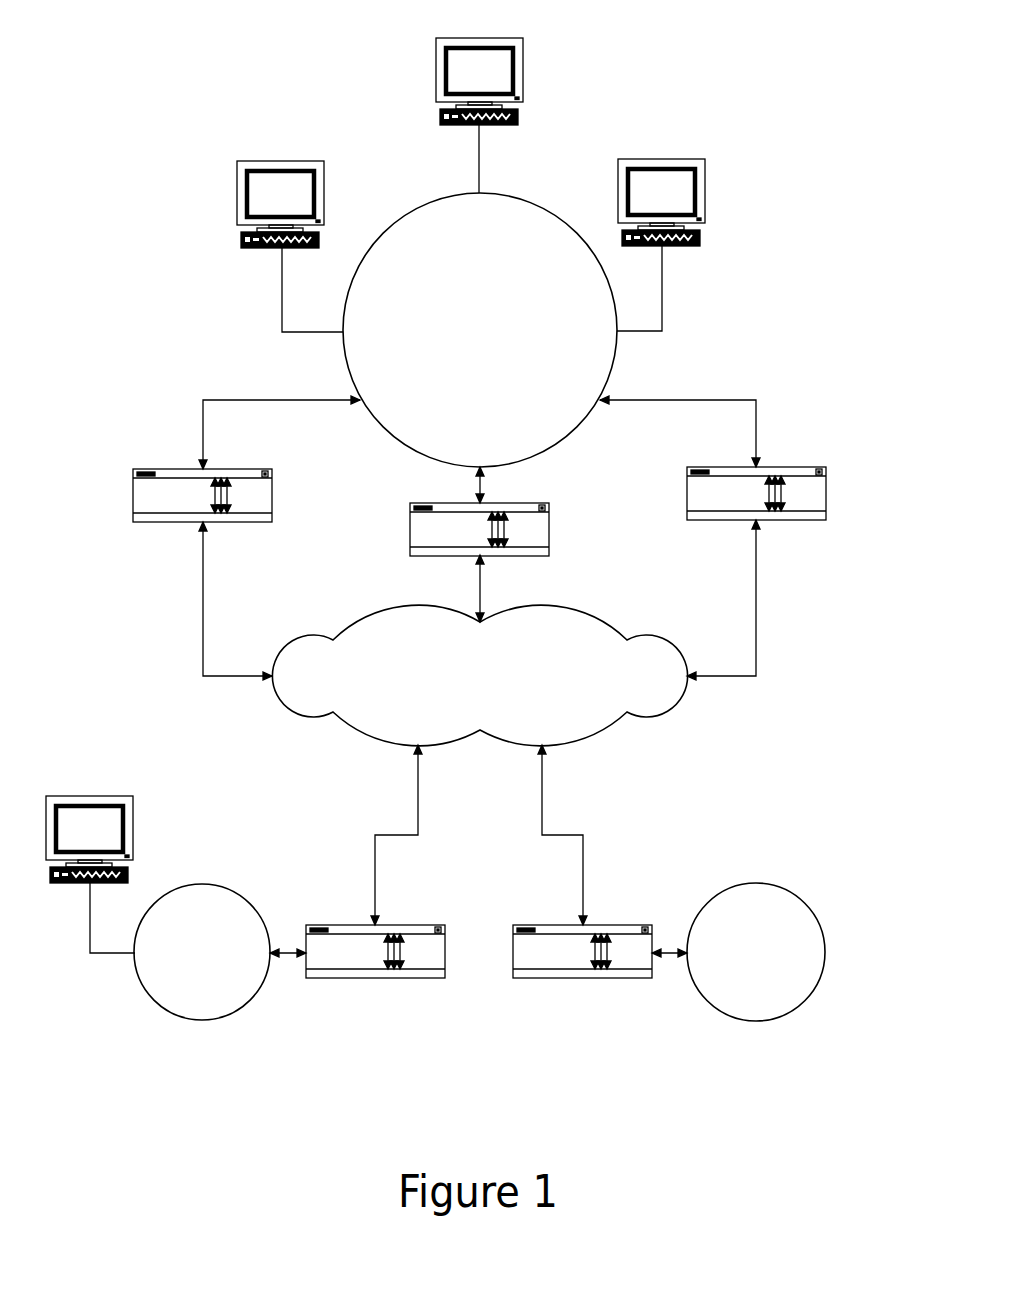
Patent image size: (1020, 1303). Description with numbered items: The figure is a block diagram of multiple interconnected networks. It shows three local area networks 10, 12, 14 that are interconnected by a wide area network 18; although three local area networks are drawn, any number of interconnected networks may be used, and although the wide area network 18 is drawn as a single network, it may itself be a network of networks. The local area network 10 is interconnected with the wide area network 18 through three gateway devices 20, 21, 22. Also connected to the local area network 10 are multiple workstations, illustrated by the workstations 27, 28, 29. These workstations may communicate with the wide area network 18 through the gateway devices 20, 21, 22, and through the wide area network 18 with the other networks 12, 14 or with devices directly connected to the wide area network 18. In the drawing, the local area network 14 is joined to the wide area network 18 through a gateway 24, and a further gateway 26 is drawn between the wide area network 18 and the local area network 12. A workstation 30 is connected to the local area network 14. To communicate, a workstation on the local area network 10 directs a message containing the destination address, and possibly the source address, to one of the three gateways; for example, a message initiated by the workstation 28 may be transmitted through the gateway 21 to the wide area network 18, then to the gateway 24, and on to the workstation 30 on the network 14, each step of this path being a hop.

The local area network 10 is at (515, 201).
The local area network 12 is at (758, 882).
The local area network 14 is at (152, 985).
The wide area network 18 is at (540, 605).
The gateway device 20 is at (826, 494).
The gateway device 21 is at (133, 496).
The gateway device 22 is at (550, 528).
The gateway 24 is at (376, 978).
The router 26 is at (583, 978).
The workstation 27 is at (523, 83).
The workstation 28 is at (237, 203).
The workstation 29 is at (705, 200).
The workstation 30 is at (133, 839).